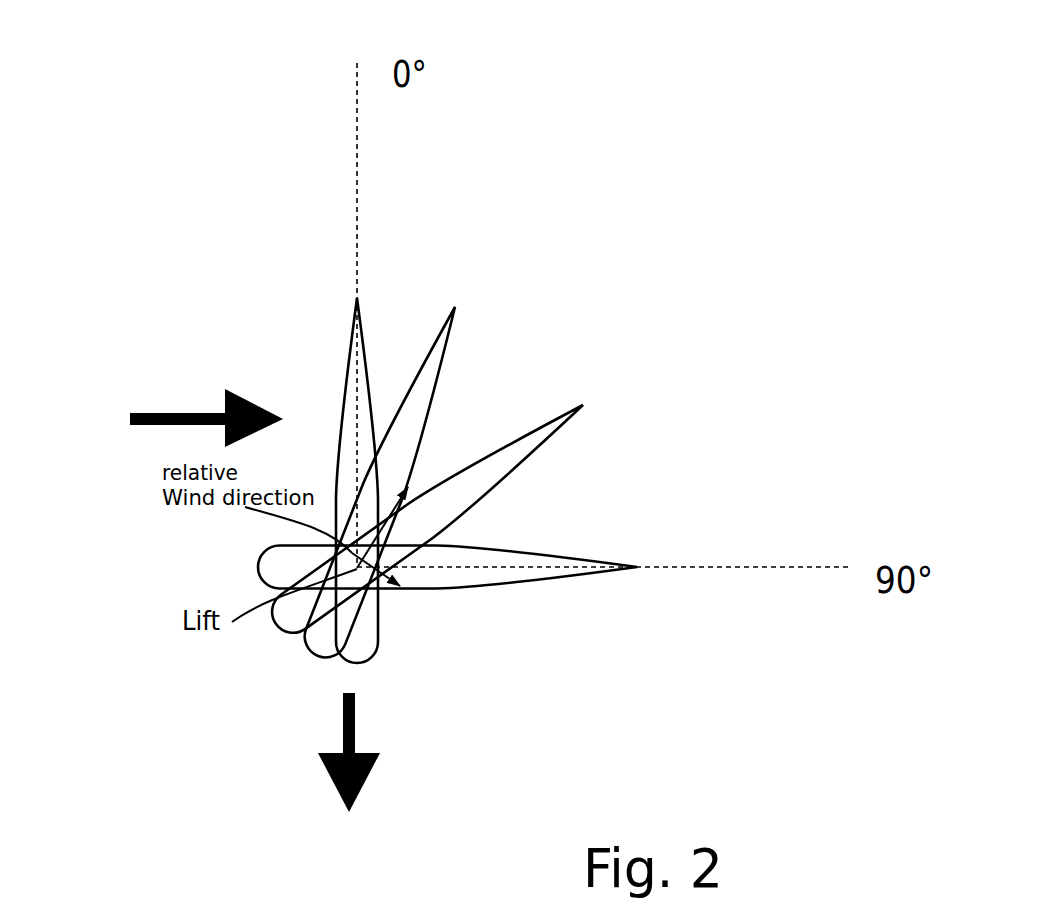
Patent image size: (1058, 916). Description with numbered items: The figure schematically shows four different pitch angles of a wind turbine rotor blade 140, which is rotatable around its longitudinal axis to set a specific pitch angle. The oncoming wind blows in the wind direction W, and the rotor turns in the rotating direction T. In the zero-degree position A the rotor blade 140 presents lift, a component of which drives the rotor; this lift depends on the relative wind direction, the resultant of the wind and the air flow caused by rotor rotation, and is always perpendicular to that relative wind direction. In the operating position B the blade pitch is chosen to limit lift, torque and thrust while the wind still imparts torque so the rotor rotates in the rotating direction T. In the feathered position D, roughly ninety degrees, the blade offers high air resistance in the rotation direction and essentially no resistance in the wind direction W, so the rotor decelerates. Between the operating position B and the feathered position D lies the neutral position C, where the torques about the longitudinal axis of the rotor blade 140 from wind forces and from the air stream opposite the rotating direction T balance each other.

The rotor blade 140 is at (392, 518).
The 0° position A is at (347, 363).
The operating position B is at (438, 347).
The neutral position C is at (583, 405).
The feathered position D is at (582, 560).
The wind direction W is at (182, 418).
The rotating direction T is at (349, 779).